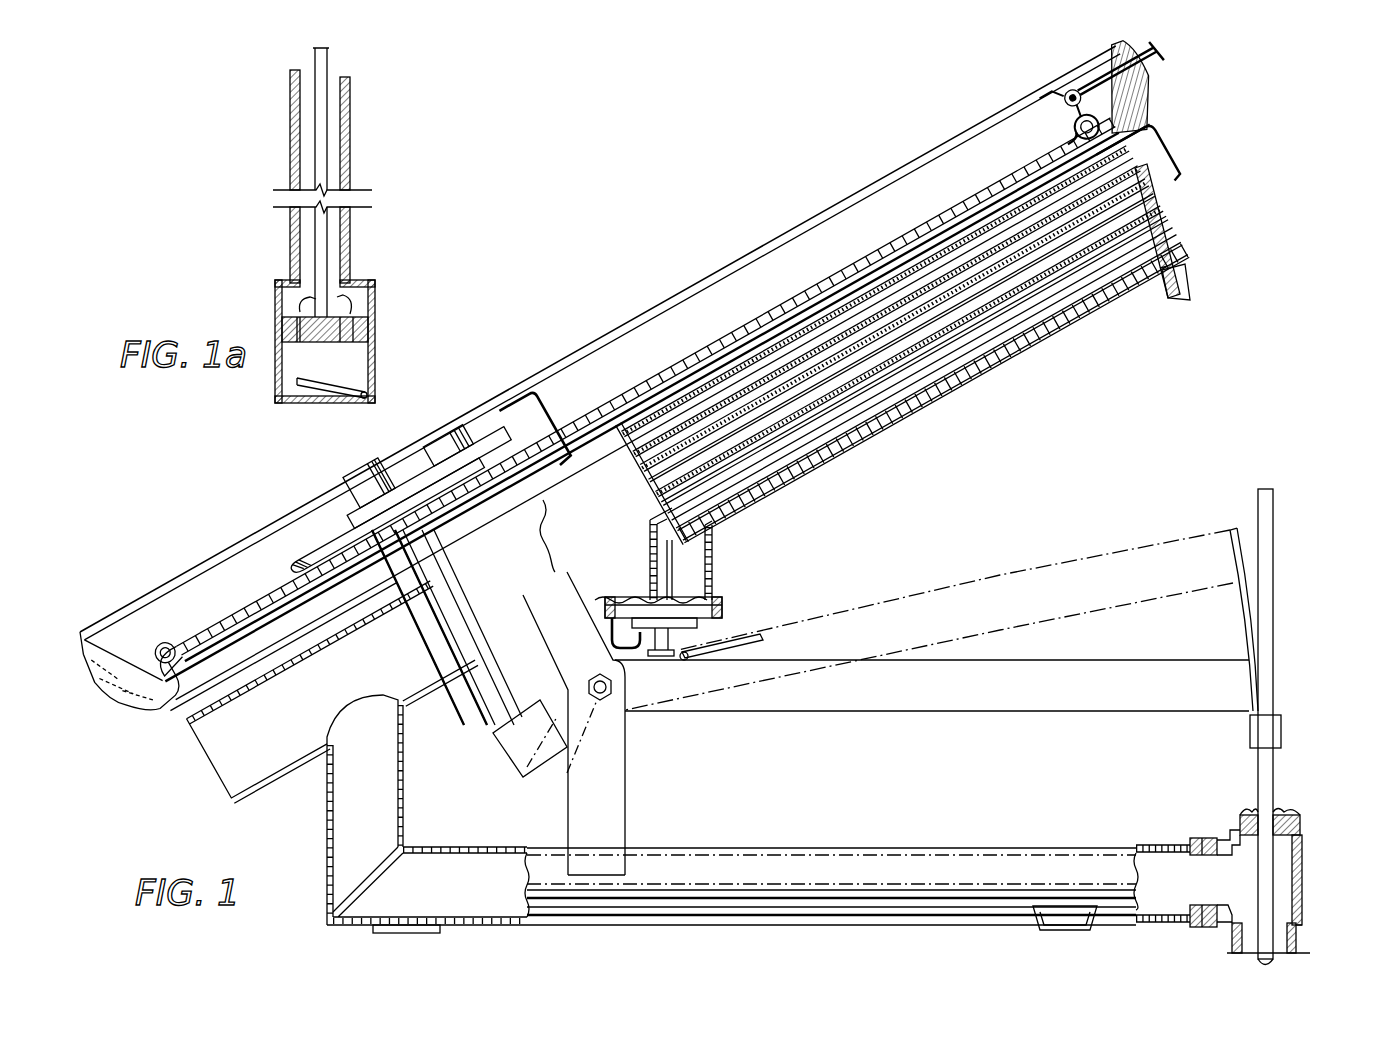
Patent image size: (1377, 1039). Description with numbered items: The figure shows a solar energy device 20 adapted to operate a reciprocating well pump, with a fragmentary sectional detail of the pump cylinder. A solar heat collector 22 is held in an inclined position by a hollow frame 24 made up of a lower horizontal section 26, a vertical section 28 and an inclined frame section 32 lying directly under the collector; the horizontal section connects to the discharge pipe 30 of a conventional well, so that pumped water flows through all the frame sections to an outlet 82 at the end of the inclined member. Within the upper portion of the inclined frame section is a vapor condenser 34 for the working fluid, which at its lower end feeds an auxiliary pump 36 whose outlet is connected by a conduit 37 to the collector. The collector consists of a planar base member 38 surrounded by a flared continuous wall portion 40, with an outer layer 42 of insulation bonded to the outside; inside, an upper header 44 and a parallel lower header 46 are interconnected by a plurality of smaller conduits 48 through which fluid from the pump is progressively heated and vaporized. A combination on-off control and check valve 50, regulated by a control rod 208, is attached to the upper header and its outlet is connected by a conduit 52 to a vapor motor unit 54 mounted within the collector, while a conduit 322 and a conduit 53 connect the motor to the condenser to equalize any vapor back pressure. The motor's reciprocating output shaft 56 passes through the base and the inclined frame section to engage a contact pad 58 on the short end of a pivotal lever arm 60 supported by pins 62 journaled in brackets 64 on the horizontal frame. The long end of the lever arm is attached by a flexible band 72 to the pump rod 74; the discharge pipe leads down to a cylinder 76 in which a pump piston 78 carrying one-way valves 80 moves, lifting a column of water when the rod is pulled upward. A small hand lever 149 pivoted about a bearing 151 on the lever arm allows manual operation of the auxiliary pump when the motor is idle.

In FIG. 1, the solar energy device 20 is at (674, 284).
In FIG. 1, the solar heat collector 22 is at (985, 168).
In FIG. 1, the frame 24 is at (405, 812).
In FIG. 1, the lower horizontal section 26 is at (793, 847).
In FIG. 1, the vertical section 28 is at (325, 803).
In FIG. 1A, the discharge pipe 30 is at (352, 148).
In FIG. 1, the discharge pipe 30 is at (1298, 943).
In FIG. 1, the inclined frame section 32 is at (203, 752).
In FIG. 1, the vapor condenser 34 is at (848, 452).
In FIG. 1, the auxiliary pump 36 is at (714, 546).
In FIG. 1, the conduit 37 is at (177, 707).
In FIG. 1, the planar base member 38 is at (719, 340).
In FIG. 1, the continuous wall portion 40 is at (123, 653).
In FIG. 1, the outer layer of insulating material 42 is at (147, 690).
In FIG. 1, the upper header 44 is at (1072, 125).
In FIG. 1, the lower header 46 is at (172, 644).
In FIG. 1, the smaller conduits 48 is at (1060, 148).
In FIG. 1, the combination on-off control and check valve 50 is at (1045, 85).
In FIG. 1, the conduit 52 is at (653, 320).
In FIG. 1, the conduit 53 is at (550, 413).
In FIG. 1, the vapor motor unit 54 is at (327, 506).
In FIG. 1, the reciprocating output piston or shaft 56 is at (418, 615).
In FIG. 1, the contact pad 58 is at (493, 735).
In FIG. 1, the pivotal lever arm 60 is at (870, 714).
In FIG. 1, the pins 62 is at (614, 692).
In FIG. 1, the brackets 64 is at (617, 787).
In FIG. 1, the flexible band 72 is at (1243, 620).
In FIG. 1, the pump rod 74 is at (1273, 592).
In FIG. 1A, the cylinder 76 is at (376, 370).
In FIG. 1A, the pump piston 78 is at (353, 338).
In FIG. 1A, the one-way valves 80 is at (355, 298).
In FIG. 1, the outlet 82 is at (1168, 300).
In FIG. 1, the hand lever 149 is at (748, 640).
In FIG. 1, the bearing 151 is at (677, 647).
In FIG. 1, the control rod 208 is at (1163, 62).
In FIG. 1, the conduit 322 is at (481, 462).